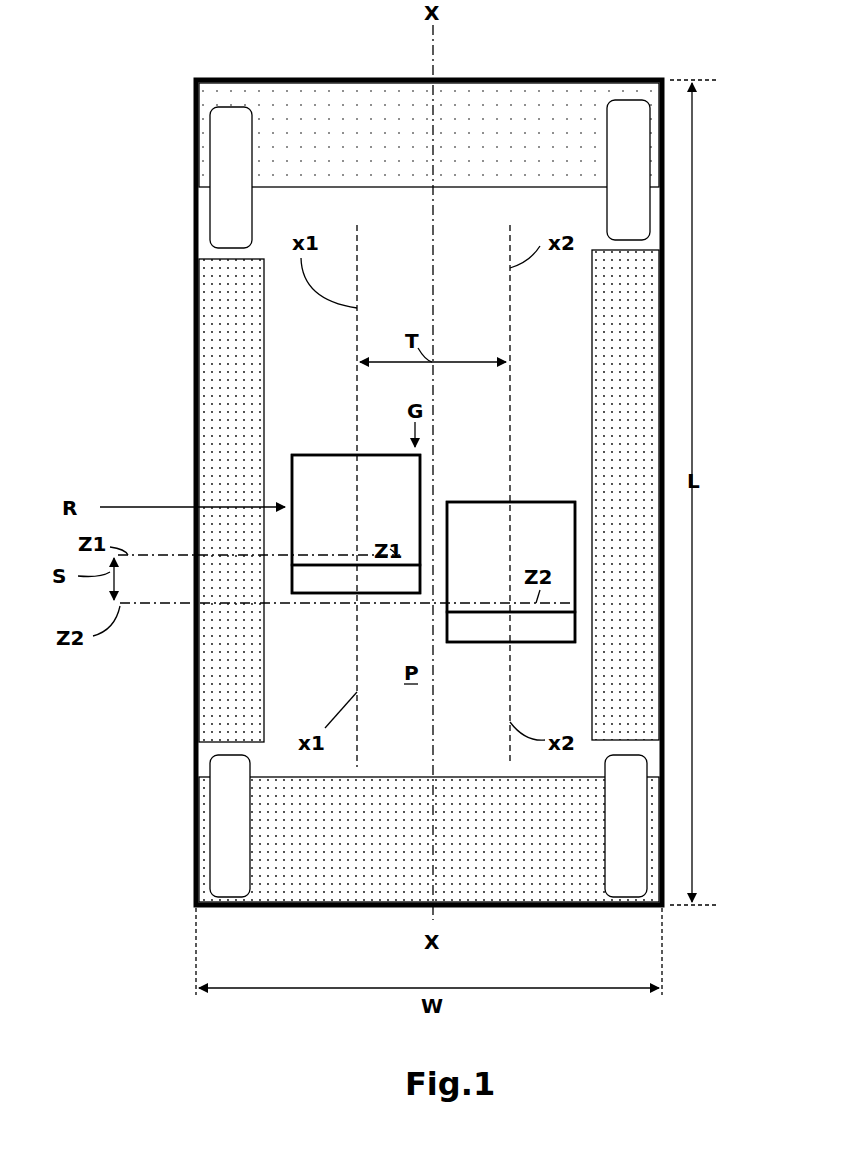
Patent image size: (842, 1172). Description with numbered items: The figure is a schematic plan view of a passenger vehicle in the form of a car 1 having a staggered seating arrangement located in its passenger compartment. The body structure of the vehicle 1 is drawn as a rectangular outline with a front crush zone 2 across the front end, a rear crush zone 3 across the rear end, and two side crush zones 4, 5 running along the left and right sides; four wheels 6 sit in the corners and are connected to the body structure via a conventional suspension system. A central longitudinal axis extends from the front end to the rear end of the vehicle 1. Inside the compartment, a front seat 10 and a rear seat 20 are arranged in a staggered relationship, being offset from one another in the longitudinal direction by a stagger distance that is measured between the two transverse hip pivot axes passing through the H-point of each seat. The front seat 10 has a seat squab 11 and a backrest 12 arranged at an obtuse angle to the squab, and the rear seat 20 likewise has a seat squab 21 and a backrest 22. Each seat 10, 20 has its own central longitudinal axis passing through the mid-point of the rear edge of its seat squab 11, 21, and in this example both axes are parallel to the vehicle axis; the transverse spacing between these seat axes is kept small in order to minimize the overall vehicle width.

The car 1 is at (188, 131).
The front crush zone 2 is at (343, 188).
The rear crush zone 3 is at (375, 778).
The side crush zone 4 is at (265, 366).
The side crush zone 5 is at (592, 370).
The wheels 6 is at (207, 158).
The front seat 10 is at (273, 541).
The seat squab 11 is at (320, 455).
The backrest 12 is at (340, 596).
The rear seat 20 is at (511, 542).
The seat squab 21 is at (482, 502).
The backrest 22 is at (522, 644).